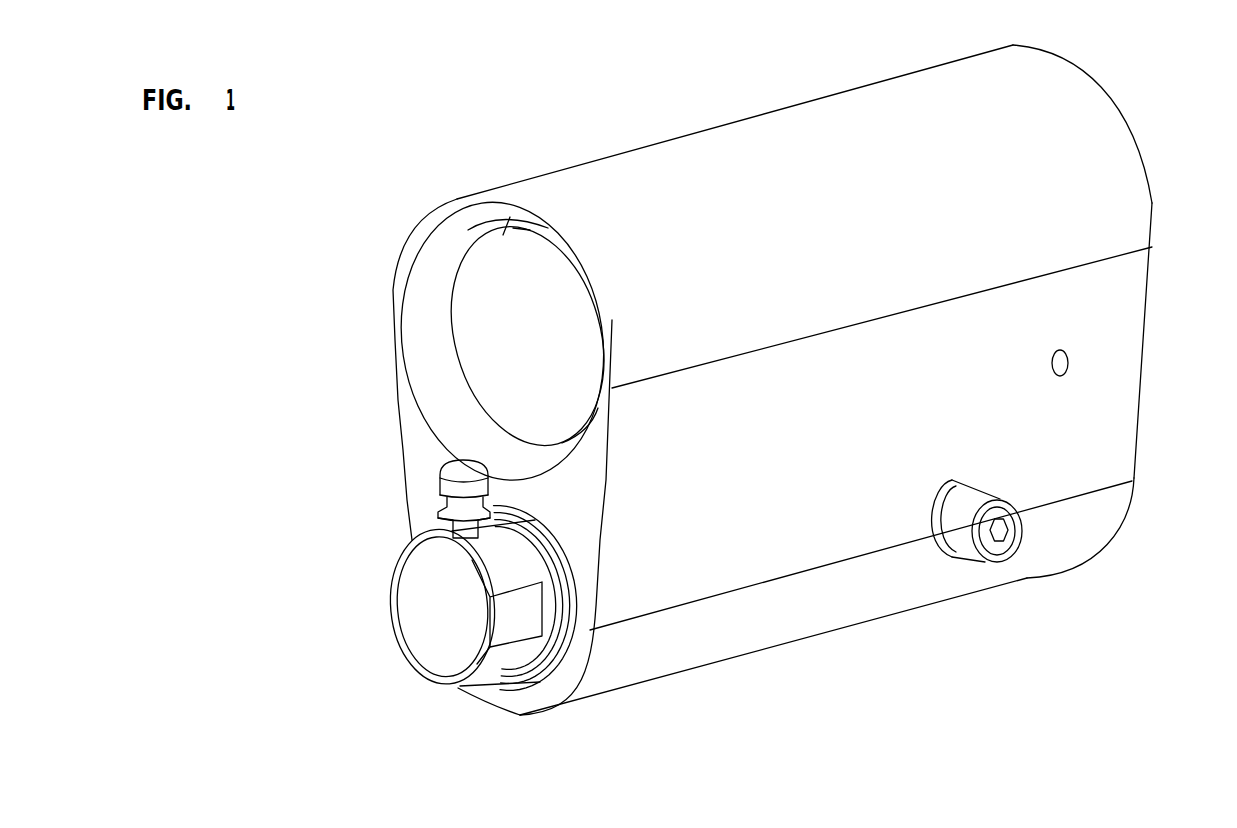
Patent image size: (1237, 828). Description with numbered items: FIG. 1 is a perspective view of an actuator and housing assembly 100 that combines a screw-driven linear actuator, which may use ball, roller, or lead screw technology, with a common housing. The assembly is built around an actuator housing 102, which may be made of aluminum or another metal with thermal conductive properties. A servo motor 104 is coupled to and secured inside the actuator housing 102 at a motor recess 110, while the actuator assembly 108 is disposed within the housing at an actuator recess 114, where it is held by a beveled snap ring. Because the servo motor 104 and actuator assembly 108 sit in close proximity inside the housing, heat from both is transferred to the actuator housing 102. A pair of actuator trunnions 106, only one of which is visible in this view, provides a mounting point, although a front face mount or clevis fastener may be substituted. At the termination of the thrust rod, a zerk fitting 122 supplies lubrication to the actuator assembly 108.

The actuator and housing assembly 100 is at (590, 122).
The actuator housing 102 is at (1123, 455).
The servo motor 104 is at (460, 308).
The actuator trunnions 106 is at (998, 562).
The actuator assembly 108 is at (392, 681).
The motor recess 110 is at (437, 348).
The actuator recess 114 is at (540, 683).
The zerk fitting 122 is at (450, 500).